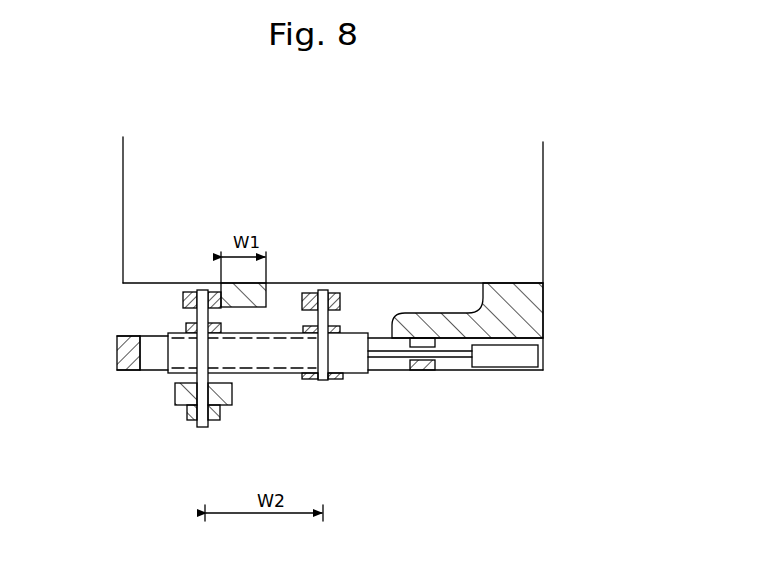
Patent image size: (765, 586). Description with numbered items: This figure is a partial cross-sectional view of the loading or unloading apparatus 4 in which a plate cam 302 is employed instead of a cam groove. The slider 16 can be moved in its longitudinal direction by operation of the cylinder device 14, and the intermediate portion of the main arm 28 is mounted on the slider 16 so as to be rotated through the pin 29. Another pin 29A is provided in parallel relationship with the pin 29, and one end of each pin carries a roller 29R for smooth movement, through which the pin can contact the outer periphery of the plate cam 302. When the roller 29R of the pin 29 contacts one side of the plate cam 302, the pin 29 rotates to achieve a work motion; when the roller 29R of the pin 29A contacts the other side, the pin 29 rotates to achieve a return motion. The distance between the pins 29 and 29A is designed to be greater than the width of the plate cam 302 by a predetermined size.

The apparatus 4 is at (121, 218).
The cylinder device 14 is at (519, 367).
The slider 16 is at (268, 376).
The main arm 28 is at (175, 390).
The pin 29 is at (201, 428).
The pin 29A is at (323, 381).
The roller 29R is at (183, 296).
The plate cam 302 is at (257, 306).